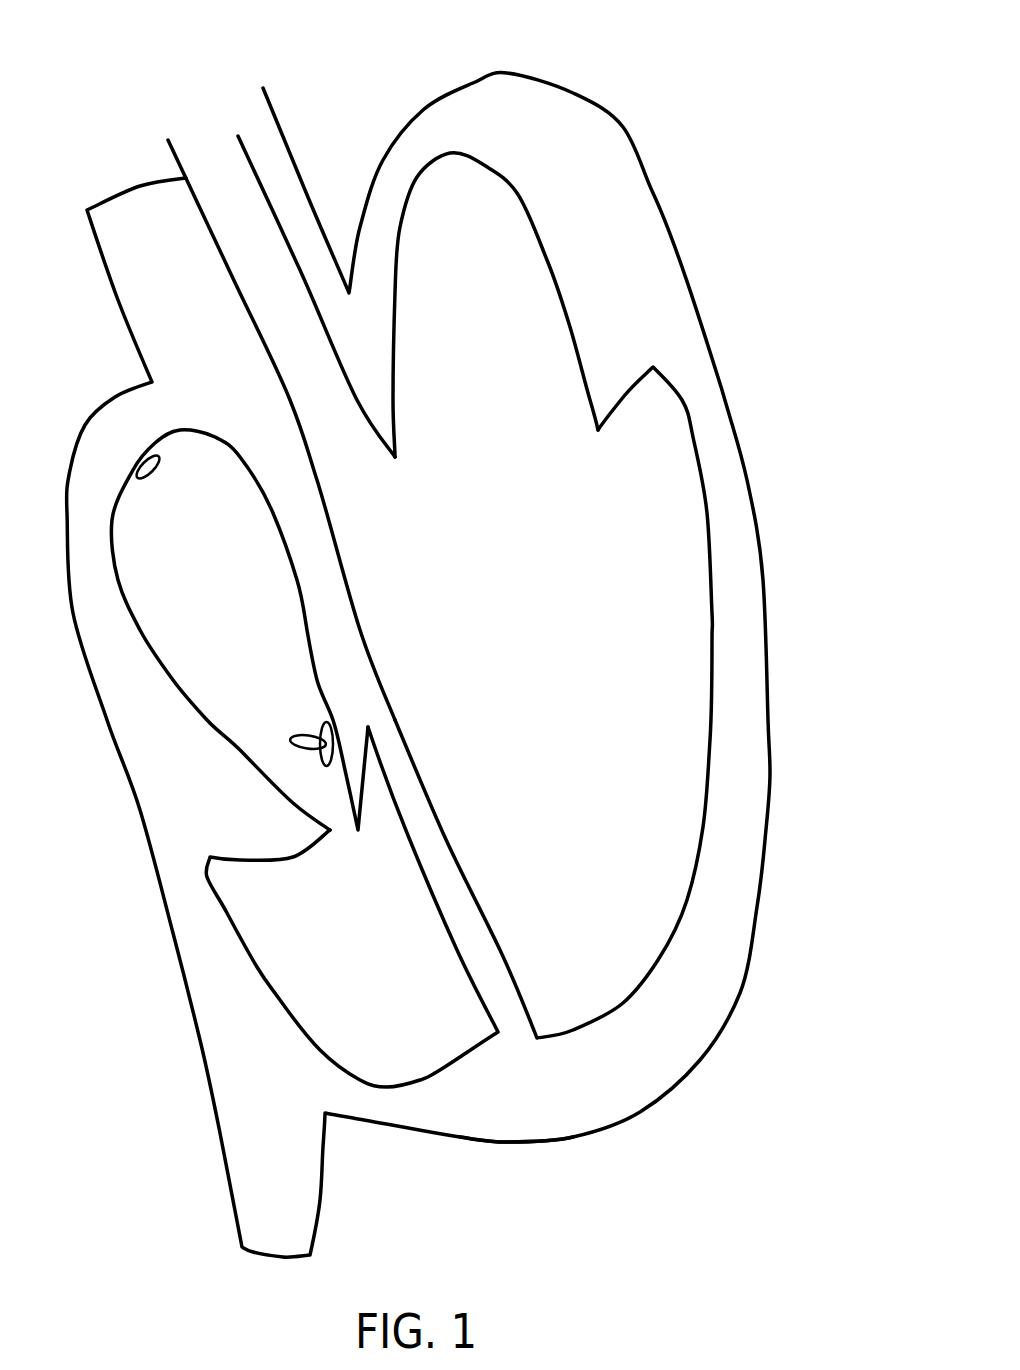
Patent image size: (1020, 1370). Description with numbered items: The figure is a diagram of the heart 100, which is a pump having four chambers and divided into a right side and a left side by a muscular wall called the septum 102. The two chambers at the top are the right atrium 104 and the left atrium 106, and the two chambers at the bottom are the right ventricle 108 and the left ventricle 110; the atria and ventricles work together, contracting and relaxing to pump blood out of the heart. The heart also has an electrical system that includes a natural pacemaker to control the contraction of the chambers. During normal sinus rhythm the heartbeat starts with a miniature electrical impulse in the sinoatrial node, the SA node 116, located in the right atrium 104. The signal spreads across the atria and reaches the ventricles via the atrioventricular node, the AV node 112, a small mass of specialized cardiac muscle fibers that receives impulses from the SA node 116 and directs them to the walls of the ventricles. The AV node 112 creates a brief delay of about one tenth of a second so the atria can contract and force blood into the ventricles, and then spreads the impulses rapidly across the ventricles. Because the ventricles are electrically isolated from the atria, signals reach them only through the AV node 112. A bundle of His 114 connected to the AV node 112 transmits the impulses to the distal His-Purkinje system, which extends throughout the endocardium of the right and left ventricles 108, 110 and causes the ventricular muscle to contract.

The heart 100 is at (741, 73).
The septum 102 is at (516, 1040).
The right atrium 104 is at (182, 622).
The left atrium 106 is at (442, 273).
The right ventricle 108 is at (299, 953).
The left ventricle 110 is at (535, 697).
The AV node 112 is at (292, 722).
The bundle of His 114 is at (333, 760).
The SA node 116 is at (158, 452).